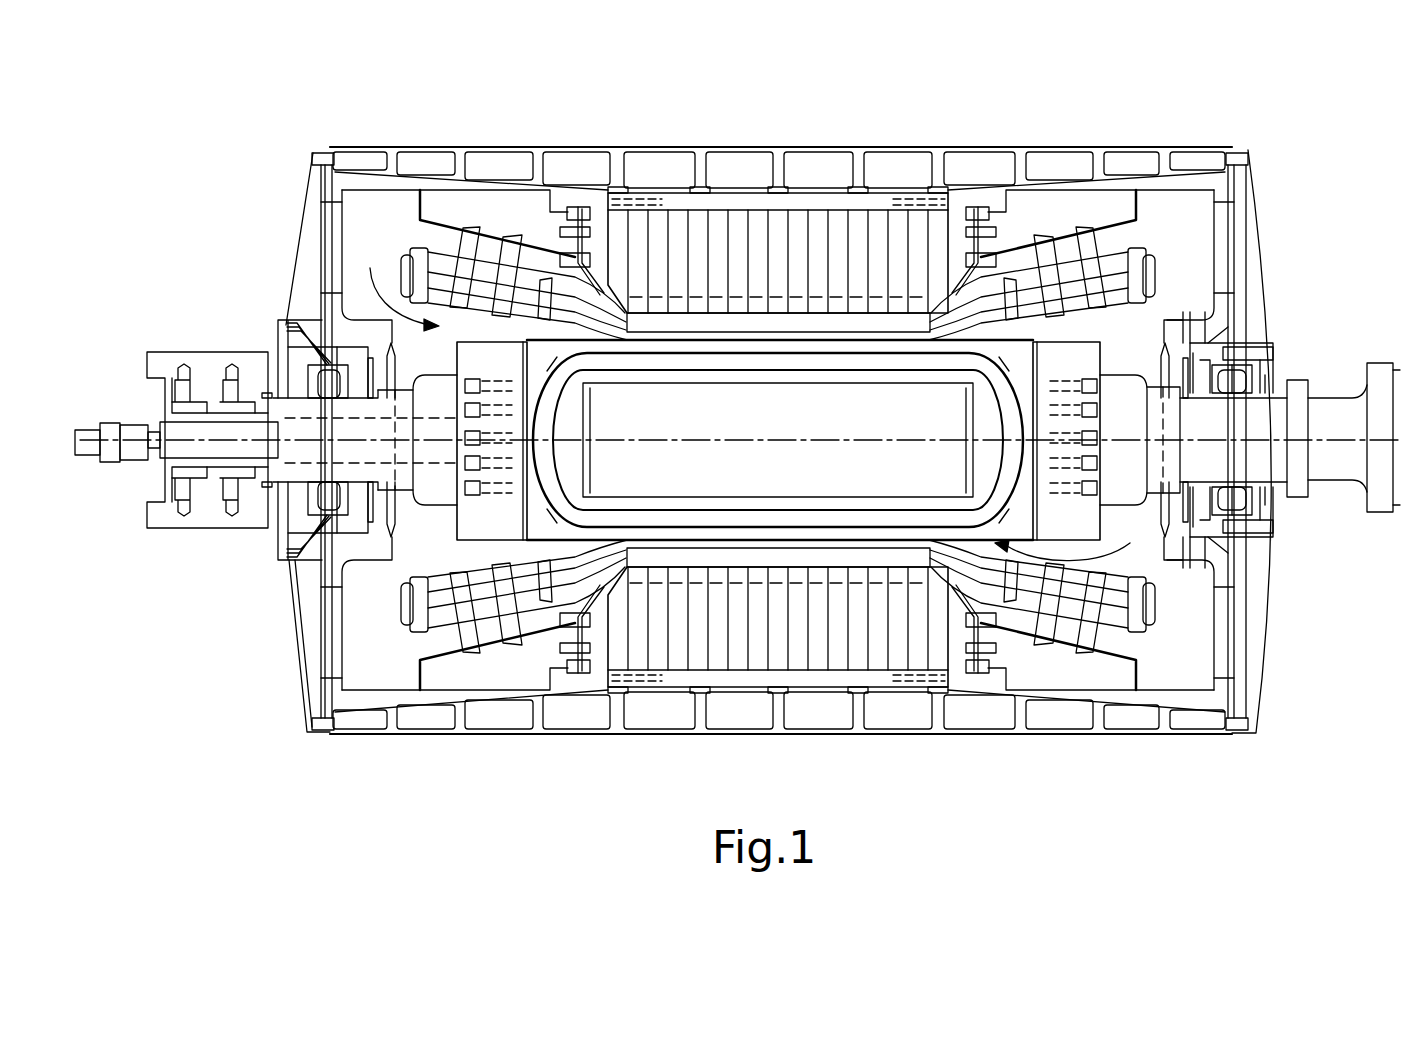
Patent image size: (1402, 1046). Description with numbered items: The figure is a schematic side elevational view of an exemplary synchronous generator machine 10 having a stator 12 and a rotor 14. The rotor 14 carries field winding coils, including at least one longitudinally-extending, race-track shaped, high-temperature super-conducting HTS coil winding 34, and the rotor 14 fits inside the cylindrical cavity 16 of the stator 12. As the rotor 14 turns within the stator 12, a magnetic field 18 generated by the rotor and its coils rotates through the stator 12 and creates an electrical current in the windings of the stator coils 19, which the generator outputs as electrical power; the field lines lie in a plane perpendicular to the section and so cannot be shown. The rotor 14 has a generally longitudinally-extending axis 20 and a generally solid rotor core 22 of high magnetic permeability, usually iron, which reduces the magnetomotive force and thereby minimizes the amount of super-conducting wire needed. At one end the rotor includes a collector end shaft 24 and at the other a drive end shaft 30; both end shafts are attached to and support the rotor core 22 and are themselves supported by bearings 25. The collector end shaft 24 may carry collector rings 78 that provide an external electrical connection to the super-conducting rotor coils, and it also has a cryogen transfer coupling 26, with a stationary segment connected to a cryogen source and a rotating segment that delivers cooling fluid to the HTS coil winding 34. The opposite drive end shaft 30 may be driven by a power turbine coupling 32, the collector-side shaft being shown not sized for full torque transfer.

The synchronous generator machine 10 is at (502, 70).
The stator 12 is at (675, 238).
The rotor 14 is at (478, 530).
The cylindrical cavity 16 is at (760, 400).
The magnetic field 18 is at (880, 287).
The stator coils 19 is at (1122, 232).
The longitudinally-extending axis 20 is at (272, 362).
The rotor core 22 is at (735, 472).
The collector end shaft 24 is at (350, 420).
The bearings 25 is at (345, 558).
The cryogen transfer coupling 26 is at (129, 425).
The drive end shaft 30 is at (1256, 418).
The power turbine coupling 32 is at (1372, 500).
The HTS coil winding 34 is at (1015, 360).
The collector rings 78 is at (223, 518).